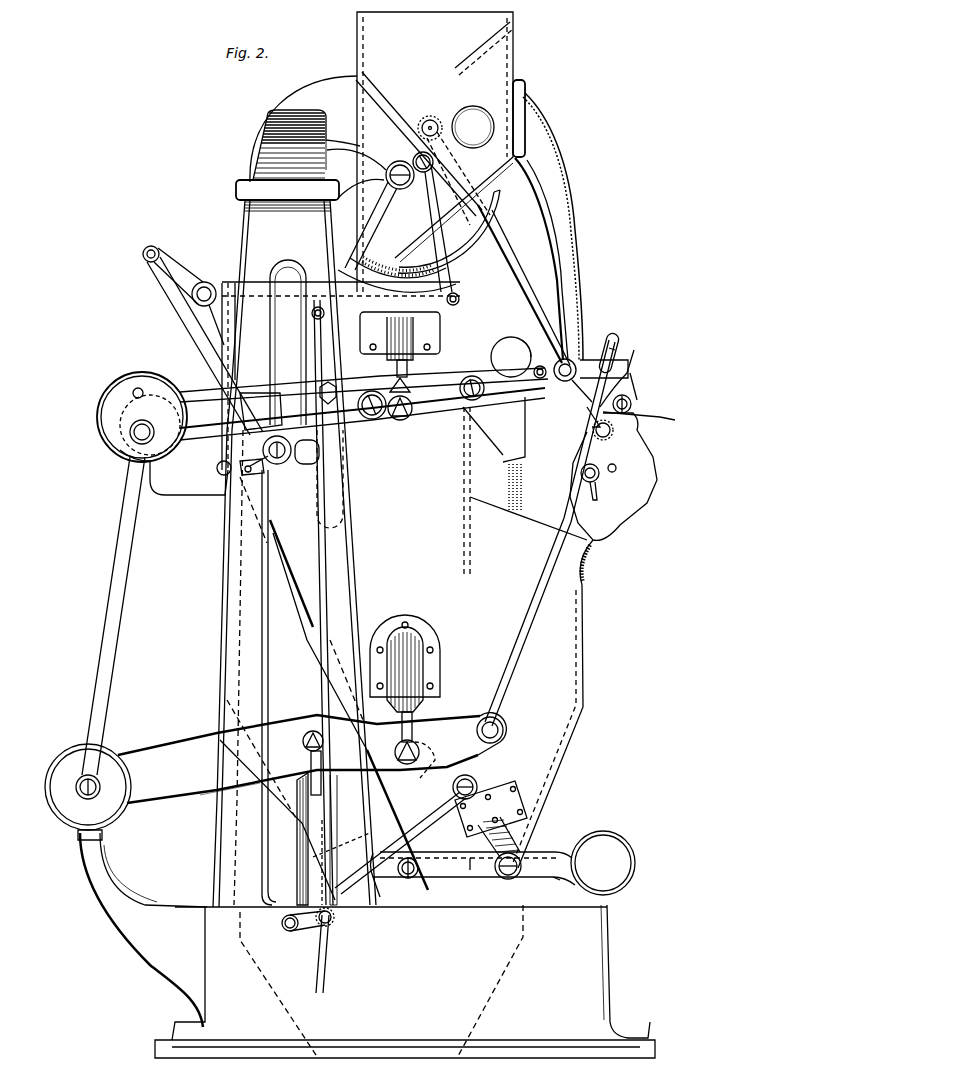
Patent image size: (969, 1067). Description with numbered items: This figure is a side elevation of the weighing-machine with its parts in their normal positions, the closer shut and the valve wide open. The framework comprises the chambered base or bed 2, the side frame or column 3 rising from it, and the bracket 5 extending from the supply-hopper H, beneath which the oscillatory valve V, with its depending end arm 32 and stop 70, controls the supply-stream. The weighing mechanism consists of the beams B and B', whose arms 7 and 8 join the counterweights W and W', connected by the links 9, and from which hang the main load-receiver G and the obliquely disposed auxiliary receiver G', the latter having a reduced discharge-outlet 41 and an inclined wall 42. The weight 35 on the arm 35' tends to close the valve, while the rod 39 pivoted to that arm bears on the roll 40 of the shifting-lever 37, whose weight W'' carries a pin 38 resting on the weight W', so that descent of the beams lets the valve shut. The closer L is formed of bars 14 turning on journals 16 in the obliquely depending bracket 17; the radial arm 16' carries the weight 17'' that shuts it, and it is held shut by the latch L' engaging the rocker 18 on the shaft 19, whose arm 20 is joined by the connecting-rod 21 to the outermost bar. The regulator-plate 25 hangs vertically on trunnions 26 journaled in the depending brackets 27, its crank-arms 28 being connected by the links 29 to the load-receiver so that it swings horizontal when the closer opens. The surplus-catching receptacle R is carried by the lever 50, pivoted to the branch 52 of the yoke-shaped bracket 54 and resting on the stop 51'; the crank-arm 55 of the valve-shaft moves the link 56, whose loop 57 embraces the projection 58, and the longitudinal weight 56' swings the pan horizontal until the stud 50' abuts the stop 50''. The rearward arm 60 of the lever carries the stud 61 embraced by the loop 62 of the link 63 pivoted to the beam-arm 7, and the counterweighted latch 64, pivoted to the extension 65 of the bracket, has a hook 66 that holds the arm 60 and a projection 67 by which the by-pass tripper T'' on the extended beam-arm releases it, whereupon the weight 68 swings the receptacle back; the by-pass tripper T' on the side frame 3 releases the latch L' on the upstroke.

The chambered base or bed 2 is at (609, 957).
The side frame or column 3 is at (348, 576).
The bracket 5 is at (270, 142).
The beam arm 7 is at (181, 800).
The beam arm 8 is at (341, 388).
The links 9 is at (117, 592).
The bars 14 is at (475, 870).
The pivots or journals 16 is at (514, 848).
The radial arm 16' is at (545, 889).
The bracket 17 is at (501, 809).
The weight 17'' is at (612, 862).
The rocker 18 is at (232, 283).
The shaft 19 is at (203, 281).
The arm 20 is at (176, 272).
The connecting-rod 21 is at (285, 585).
The regulator-plate 25 is at (327, 968).
The trunnions 26 is at (334, 920).
The depending brackets 27 is at (408, 878).
The crank-arms 28 is at (304, 931).
The links 29 is at (436, 805).
The valve end arm 32 is at (447, 226).
The weight 35 is at (474, 116).
The arm 35' is at (437, 115).
The shifting-lever 37 is at (371, 422).
The pin 38 is at (137, 388).
The rod 39 is at (460, 182).
The projection or roll 40 is at (474, 400).
The discharge-outlet 41 is at (508, 445).
The inclined wall or side 42 is at (477, 422).
The lever 50 is at (568, 426).
The stud 50' is at (625, 480).
The stop 50'' is at (591, 496).
The stop 51' is at (545, 386).
The branch 52 is at (580, 278).
The yoke-shaped bracket 54 is at (526, 88).
The crank-arm 55 is at (413, 142).
The link 56 is at (524, 285).
The longitudinal weight 56' is at (679, 425).
The loop 57 is at (632, 415).
The lateral projection 58 is at (607, 436).
The rearwardly-extending arm 60 is at (606, 368).
The projection or stud 61 is at (614, 352).
The loop 62 is at (608, 340).
The link 63 is at (540, 576).
The counterweighted latch 64 is at (632, 401).
The extension 65 is at (628, 378).
The hook 66 is at (630, 382).
The projection 67 is at (578, 405).
The weight 68 is at (512, 337).
The stop 70 is at (374, 210).
The beam B is at (312, 758).
The beam B' is at (189, 475).
The main load-receiver G is at (552, 704).
The auxiliary receiver G' is at (525, 486).
The supply-hopper H is at (435, 152).
The closer L is at (473, 874).
The latch L' is at (279, 461).
The receptacle or pan R is at (619, 476).
The by-pass tripper T' is at (528, 344).
The by-pass tripper T'' is at (212, 486).
The valve V is at (496, 204).
The counterweight W is at (81, 795).
The counterweight W' is at (115, 469).
The weight W'' is at (131, 417).